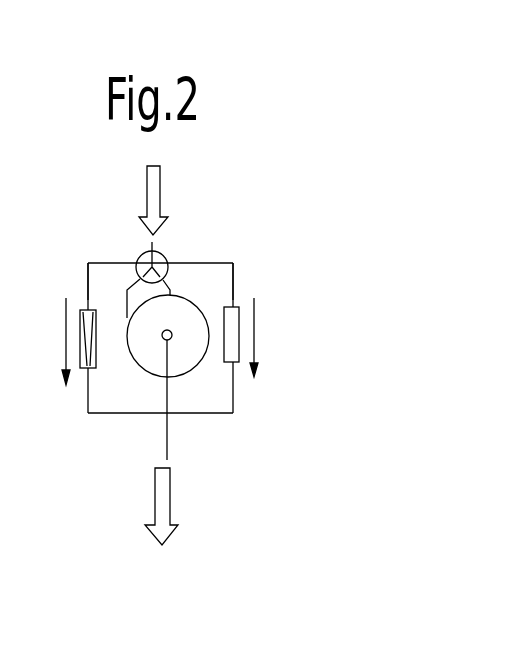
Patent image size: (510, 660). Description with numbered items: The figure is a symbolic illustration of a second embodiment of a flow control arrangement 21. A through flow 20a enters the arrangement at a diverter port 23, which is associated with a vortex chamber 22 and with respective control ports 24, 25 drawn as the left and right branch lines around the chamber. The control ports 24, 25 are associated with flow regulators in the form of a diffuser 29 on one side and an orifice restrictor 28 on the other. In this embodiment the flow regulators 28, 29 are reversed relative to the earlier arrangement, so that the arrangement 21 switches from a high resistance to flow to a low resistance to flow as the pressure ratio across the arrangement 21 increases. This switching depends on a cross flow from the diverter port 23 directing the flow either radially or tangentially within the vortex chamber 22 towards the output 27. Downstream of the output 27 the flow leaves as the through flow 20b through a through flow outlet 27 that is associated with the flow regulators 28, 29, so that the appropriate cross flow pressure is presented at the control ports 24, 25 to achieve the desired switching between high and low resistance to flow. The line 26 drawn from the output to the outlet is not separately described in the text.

The through flow 20a is at (148, 197).
The through flow 20b is at (160, 503).
The flow control arrangement 21 is at (201, 345).
The vortex chamber 22 is at (152, 360).
The diverter port 23 is at (163, 257).
The control port 24 is at (112, 263).
The control port 25 is at (218, 262).
The drive shaft 26 is at (170, 445).
The output 27 is at (170, 355).
The orifice restrictor 28 is at (238, 310).
The diffuser 29 is at (85, 310).